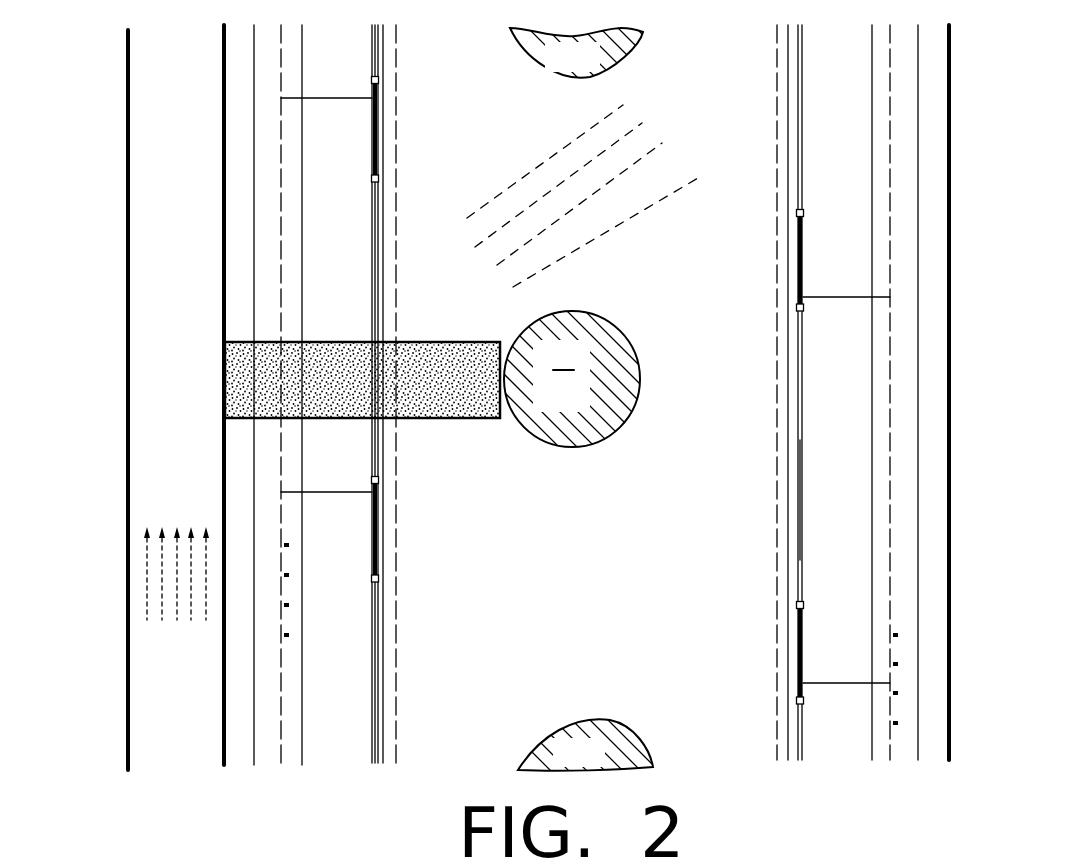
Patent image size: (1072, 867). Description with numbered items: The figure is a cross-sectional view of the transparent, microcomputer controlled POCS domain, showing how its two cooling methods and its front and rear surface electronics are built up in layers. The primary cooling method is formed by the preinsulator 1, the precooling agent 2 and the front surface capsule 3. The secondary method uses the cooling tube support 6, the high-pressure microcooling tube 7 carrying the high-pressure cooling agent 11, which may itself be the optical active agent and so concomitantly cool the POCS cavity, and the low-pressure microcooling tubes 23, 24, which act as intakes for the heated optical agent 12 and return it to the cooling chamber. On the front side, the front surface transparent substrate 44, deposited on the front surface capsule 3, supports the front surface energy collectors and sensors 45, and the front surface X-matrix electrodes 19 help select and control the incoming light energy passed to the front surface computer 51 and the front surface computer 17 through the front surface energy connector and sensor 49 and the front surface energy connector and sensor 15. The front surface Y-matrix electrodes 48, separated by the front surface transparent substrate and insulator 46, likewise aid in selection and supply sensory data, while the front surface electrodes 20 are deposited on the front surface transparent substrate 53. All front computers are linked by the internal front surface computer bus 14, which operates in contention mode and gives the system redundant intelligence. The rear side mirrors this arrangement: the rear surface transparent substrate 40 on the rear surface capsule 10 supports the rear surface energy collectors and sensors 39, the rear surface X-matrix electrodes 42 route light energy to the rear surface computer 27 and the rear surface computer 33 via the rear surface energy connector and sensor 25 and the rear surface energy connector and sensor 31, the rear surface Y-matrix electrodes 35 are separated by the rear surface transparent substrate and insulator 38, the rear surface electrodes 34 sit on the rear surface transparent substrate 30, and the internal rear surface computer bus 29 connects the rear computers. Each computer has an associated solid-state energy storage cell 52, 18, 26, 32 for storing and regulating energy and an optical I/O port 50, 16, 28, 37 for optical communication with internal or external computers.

The preinsulator 1 is at (125, 87).
The precooling agent 2 is at (170, 583).
The front surface capsule 3 is at (222, 102).
The cooling tube support 6 is at (371, 342).
The high-pressure microcooling tube 7 is at (618, 394).
The rear surface capsule 10 is at (952, 680).
The high-pressure cooling agent 11 is at (571, 377).
The heated optical agent 12 is at (568, 188).
The internal front surface computer bus 14 is at (380, 278).
The front surface energy connector and sensor 15 is at (320, 492).
The optical I/O port 16 is at (379, 480).
The front surface computer 17 is at (377, 537).
The energy storage cell 18 is at (379, 580).
The front surface X-matrix electrodes 19 is at (287, 635).
The front surface electrodes 20 is at (397, 730).
The low-pressure microcooling tube 23 is at (638, 33).
The low-pressure microcooling tube 24 is at (645, 750).
The rear surface energy connector and sensor 25 is at (855, 683).
The energy storage cell 26 is at (800, 702).
The rear surface computer 27 is at (800, 663).
The optical I/O port 28 is at (800, 607).
The internal rear surface computer bus 29 is at (800, 502).
The rear surface transparent substrate 30 is at (790, 423).
The rear surface energy connector and sensor 31 is at (855, 297).
The energy storage cell 32 is at (798, 308).
The rear surface computer 33 is at (800, 262).
The rear surface electrodes 34 is at (777, 32).
The rear surface Y-matrix electrodes 35 is at (802, 88).
The optical I/O port 37 is at (804, 215).
The rear surface transparent substrate and insulator 38 is at (873, 393).
The rear surface energy collectors and sensors 39 is at (890, 483).
The rear surface transparent substrate 40 is at (920, 583).
The rear surface X-matrix electrodes 42 is at (897, 722).
The front surface transparent substrate 44 is at (254, 205).
The front surface energy collectors and sensors 45 is at (281, 300).
The front surface transparent substrate and insulator 46 is at (305, 687).
The front surface Y-matrix electrodes 48 is at (372, 37).
The front surface energy connector and sensor 49 is at (320, 98).
The optical I/O port 50 is at (378, 80).
The front surface computer 51 is at (377, 147).
The energy storage cell 52 is at (379, 180).
The front surface transparent substrate 53 is at (385, 233).